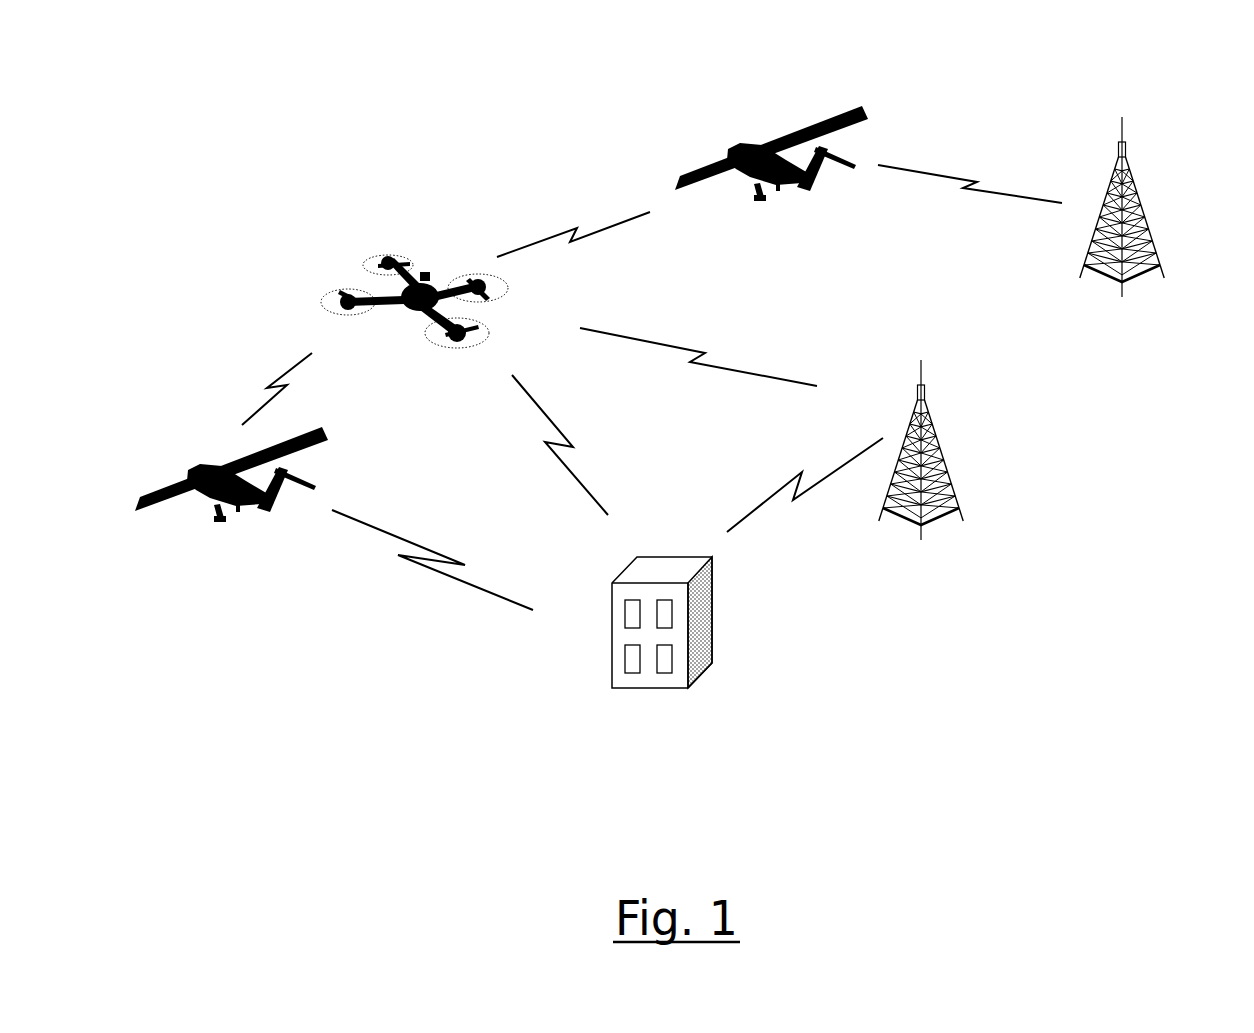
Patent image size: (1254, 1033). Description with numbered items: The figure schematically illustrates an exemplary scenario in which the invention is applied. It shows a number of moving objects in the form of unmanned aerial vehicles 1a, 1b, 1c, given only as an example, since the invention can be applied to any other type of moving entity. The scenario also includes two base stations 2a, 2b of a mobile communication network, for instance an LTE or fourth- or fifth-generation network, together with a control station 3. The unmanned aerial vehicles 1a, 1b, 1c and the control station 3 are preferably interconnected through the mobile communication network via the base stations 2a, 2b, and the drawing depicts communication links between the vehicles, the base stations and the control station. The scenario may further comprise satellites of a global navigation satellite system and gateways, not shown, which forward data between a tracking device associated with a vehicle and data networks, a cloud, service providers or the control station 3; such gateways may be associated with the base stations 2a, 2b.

The unmanned aerial vehicle 1a is at (731, 110).
The unmanned aerial vehicle 1b is at (368, 235).
The unmanned aerial vehicle 1c is at (204, 431).
The base station 2a is at (1164, 163).
The base station 2b is at (960, 427).
The control station 3 is at (740, 617).